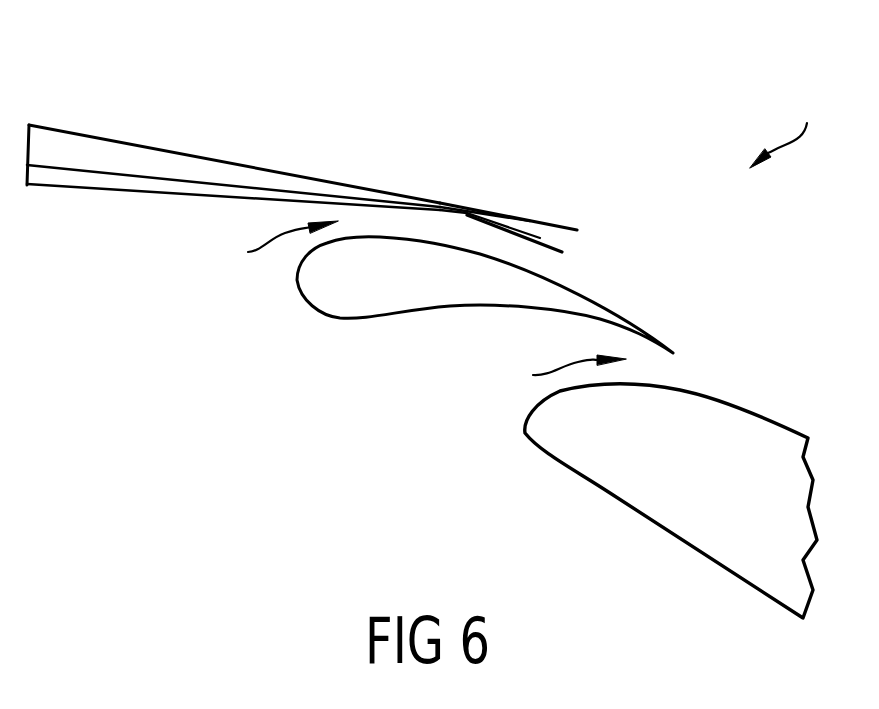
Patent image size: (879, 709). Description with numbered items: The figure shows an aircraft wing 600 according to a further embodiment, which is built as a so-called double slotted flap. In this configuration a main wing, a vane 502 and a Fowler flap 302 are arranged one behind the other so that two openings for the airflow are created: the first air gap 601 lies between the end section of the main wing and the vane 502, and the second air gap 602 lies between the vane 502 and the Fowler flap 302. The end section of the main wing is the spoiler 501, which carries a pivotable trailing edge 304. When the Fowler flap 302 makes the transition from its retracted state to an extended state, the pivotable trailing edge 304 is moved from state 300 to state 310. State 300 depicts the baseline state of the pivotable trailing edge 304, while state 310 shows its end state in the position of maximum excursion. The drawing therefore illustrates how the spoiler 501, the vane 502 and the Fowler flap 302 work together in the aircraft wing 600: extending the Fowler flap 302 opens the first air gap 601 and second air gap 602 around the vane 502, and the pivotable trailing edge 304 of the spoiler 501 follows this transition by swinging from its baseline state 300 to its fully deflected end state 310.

The spoiler 501 is at (88, 150).
The baseline state 300 is at (540, 220).
The pivotable trailing edge 304 is at (448, 204).
The end state 310 is at (563, 252).
The vane 502 is at (548, 296).
The first air gap 601 is at (263, 248).
The second air gap 602 is at (547, 376).
The Fowler flap 302 is at (737, 428).
The aircraft wing 600 is at (792, 122).